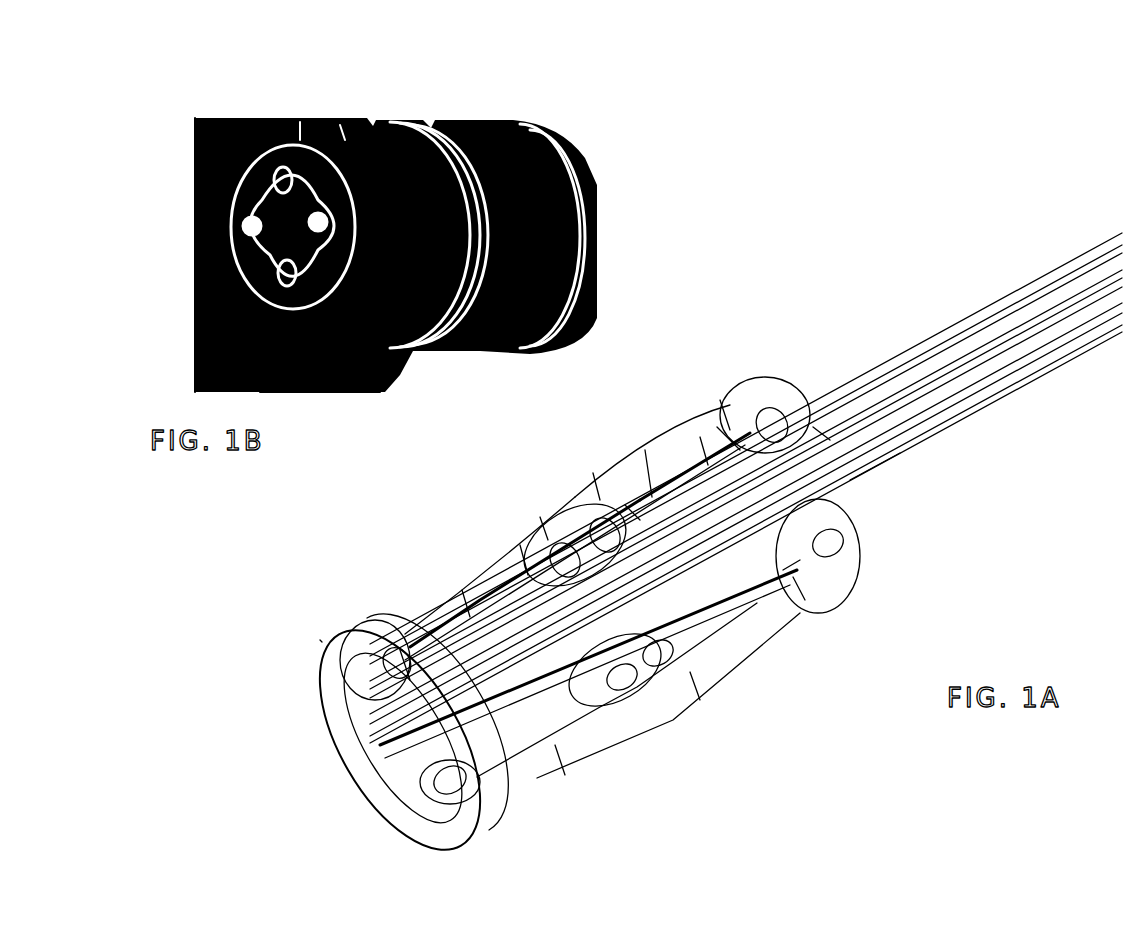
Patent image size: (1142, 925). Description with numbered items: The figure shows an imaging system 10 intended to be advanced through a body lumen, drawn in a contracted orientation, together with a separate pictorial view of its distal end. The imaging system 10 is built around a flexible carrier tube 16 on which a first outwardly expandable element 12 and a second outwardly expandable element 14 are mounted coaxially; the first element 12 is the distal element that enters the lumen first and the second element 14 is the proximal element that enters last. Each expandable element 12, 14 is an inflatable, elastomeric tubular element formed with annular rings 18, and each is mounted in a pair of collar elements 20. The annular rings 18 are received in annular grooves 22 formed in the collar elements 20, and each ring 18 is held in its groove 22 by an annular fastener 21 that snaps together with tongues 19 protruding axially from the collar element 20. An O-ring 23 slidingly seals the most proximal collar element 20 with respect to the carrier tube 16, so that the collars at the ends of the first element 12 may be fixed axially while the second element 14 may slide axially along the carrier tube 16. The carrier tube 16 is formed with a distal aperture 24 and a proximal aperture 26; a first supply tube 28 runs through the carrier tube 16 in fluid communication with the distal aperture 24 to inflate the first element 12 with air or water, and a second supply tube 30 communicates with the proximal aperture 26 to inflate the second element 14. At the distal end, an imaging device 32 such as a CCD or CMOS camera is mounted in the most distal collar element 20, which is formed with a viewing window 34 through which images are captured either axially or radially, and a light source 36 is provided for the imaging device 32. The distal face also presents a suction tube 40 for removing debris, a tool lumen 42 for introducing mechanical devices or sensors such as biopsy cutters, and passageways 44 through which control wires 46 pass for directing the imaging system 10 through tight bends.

In FIG. 1A, the imaging system 10 is at (662, 312).
In FIG. 1B, the first outwardly expandable element 12 is at (374, 110).
In FIG. 1A, the first outwardly expandable element 12 is at (487, 563).
In FIG. 1B, the second outwardly expandable element 14 is at (478, 116).
In FIG. 1A, the second outwardly expandable element 14 is at (693, 437).
In FIG. 1A, the carrier tube 16 is at (1000, 313).
In FIG. 1A, the annular rings 18 is at (775, 425).
In FIG. 1A, the tongues 19 is at (717, 427).
In FIG. 1B, the collar elements 20 is at (323, 113).
In FIG. 1A, the collar elements 20 is at (367, 637).
In FIG. 1A, the annular fastener 21 is at (400, 650).
In FIG. 1A, the annular grooves 22 is at (773, 417).
In FIG. 1A, the O-ring 23 is at (813, 427).
In FIG. 1A, the distal aperture 24 is at (423, 605).
In FIG. 1A, the proximal aperture 26 is at (625, 505).
In FIG. 1B, the first supply tube 28 is at (213, 127).
In FIG. 1A, the first supply tube 28 is at (447, 580).
In FIG. 1A, the second supply tube 30 is at (850, 480).
In FIG. 1B, the imaging device 32 is at (345, 358).
In FIG. 1B, the viewing window 34 is at (280, 390).
In FIG. 1A, the viewing window 34 is at (330, 713).
In FIG. 1B, the light source 36 is at (193, 225).
In FIG. 1B, the suction tube 40 is at (193, 317).
In FIG. 1B, the tool lumen 42 is at (340, 120).
In FIG. 1B, the passageways 44 is at (420, 117).
In FIG. 1B, the control wires 46 is at (437, 117).